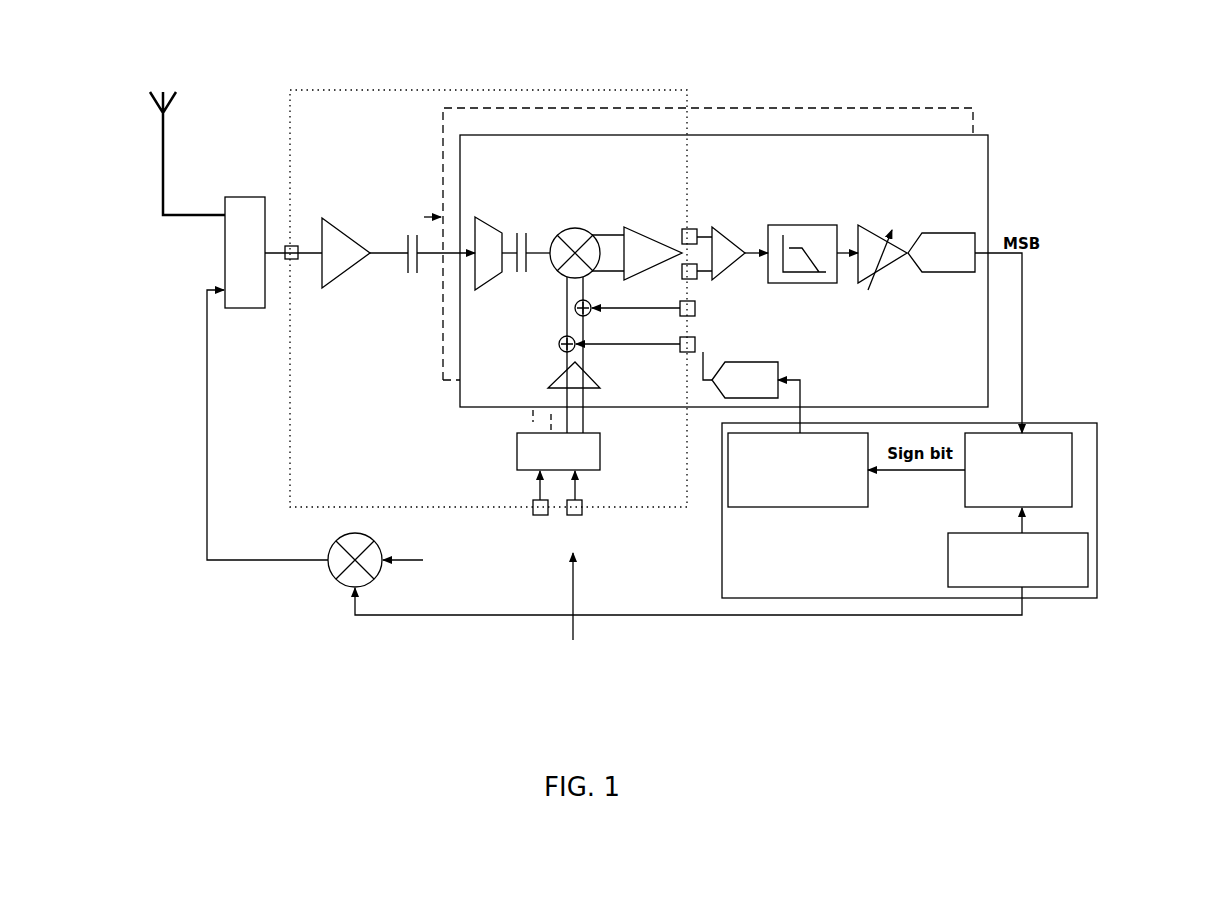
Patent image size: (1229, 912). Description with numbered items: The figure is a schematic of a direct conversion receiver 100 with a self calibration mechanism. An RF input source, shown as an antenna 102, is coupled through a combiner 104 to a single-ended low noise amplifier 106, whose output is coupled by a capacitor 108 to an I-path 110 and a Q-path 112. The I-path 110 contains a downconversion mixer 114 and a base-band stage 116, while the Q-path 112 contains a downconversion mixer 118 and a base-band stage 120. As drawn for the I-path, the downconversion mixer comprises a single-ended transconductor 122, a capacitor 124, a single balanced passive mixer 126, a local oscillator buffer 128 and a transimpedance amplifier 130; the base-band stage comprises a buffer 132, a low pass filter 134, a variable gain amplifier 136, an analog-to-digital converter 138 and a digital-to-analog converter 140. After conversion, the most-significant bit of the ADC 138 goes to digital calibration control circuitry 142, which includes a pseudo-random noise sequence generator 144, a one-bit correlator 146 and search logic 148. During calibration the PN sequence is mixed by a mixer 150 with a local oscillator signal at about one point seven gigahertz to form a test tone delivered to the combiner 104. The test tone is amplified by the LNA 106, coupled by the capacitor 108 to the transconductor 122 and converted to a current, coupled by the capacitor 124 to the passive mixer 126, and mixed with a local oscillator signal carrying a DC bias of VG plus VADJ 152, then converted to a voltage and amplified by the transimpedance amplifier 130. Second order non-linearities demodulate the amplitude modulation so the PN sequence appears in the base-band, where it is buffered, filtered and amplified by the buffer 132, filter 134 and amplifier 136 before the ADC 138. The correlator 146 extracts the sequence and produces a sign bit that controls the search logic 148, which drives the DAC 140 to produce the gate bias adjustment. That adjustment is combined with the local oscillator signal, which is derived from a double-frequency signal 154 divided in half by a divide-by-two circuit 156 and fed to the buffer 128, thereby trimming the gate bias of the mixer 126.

The receiver 100 is at (1152, 29).
The antenna 102 is at (157, 150).
The combiner 104 is at (230, 196).
The single-ended low noise amplifier 106 is at (322, 218).
The capacitor 108 is at (408, 225).
The I-path 110 is at (991, 135).
The Q-path 112 is at (975, 106).
The downconversion mixer 114 is at (675, 160).
The base-band stage 116 is at (910, 147).
The downconversion mixer 118 is at (636, 126).
The base-band stage 120 is at (826, 111).
The single-ended transconductor 122 is at (500, 272).
The capacitor 124 is at (516, 276).
The single balanced passive mixer 126 is at (548, 279).
The local oscillator buffer 128 is at (547, 378).
The transimpedance amplifier 130 is at (624, 226).
The buffer 132 is at (721, 226).
The low pass filter 134 is at (783, 222).
The variable gain amplifier 136 is at (862, 222).
The analog-to-digital converter 138 is at (938, 222).
The digital-to-analog converter 140 is at (787, 367).
The digital calibration control circuitry 142 is at (1098, 477).
The pseudo-random noise sequence generator 144 is at (1077, 545).
The 1-bit correlator 146 is at (1060, 440).
The search logic 148 is at (760, 487).
The mixer 150 is at (337, 588).
The DC bias VG+VADJ 152 is at (763, 330).
The double-local-oscillator-frequency signal 154 is at (562, 607).
The divide-by-two circuit 156 is at (600, 470).